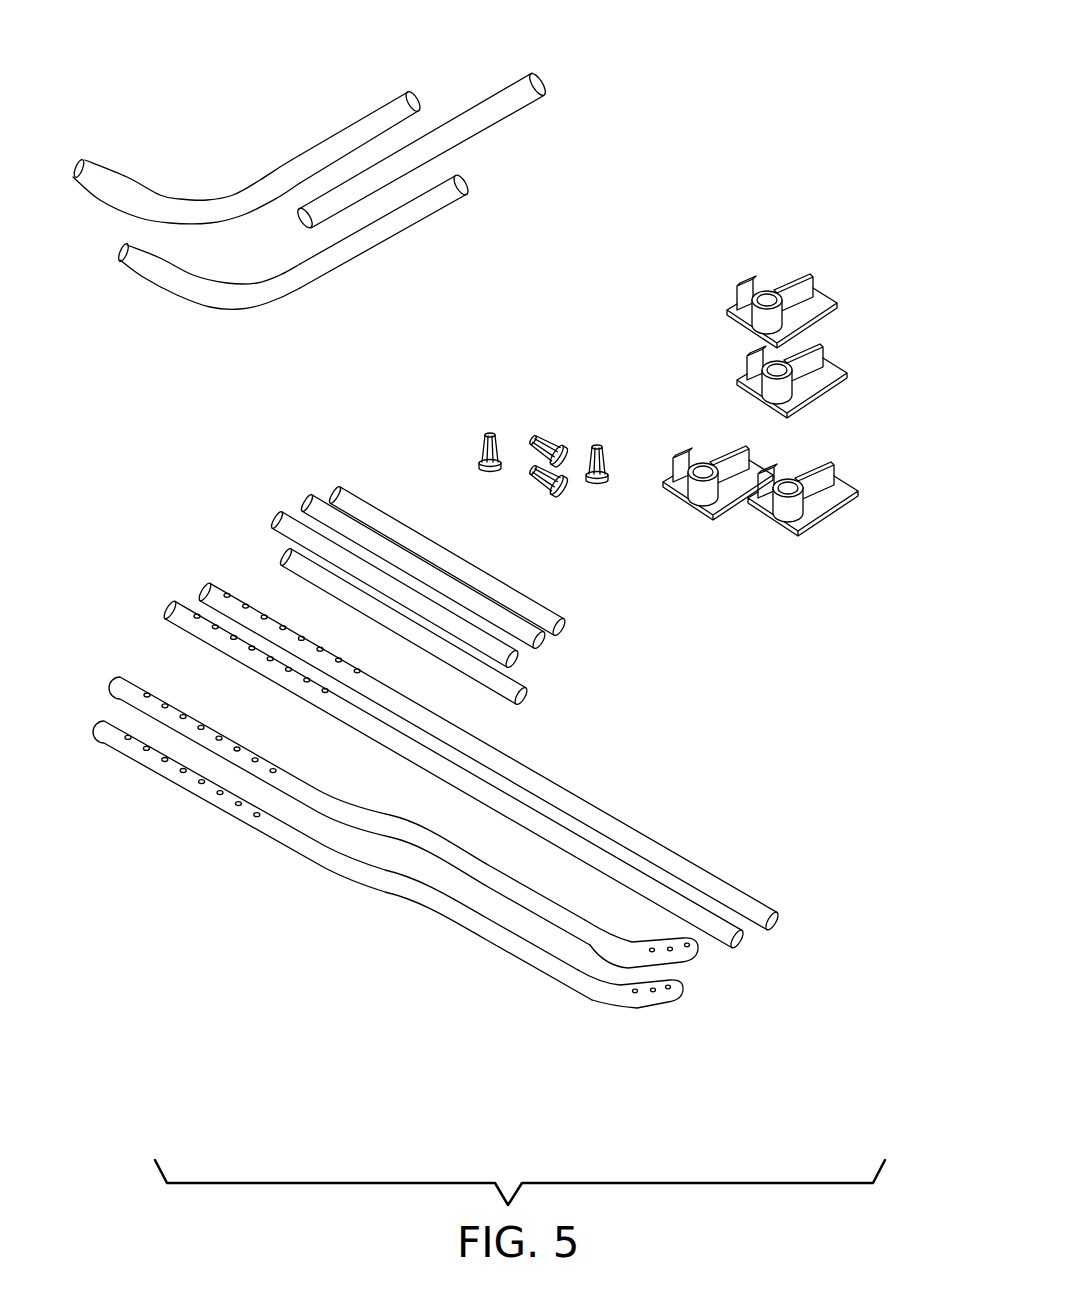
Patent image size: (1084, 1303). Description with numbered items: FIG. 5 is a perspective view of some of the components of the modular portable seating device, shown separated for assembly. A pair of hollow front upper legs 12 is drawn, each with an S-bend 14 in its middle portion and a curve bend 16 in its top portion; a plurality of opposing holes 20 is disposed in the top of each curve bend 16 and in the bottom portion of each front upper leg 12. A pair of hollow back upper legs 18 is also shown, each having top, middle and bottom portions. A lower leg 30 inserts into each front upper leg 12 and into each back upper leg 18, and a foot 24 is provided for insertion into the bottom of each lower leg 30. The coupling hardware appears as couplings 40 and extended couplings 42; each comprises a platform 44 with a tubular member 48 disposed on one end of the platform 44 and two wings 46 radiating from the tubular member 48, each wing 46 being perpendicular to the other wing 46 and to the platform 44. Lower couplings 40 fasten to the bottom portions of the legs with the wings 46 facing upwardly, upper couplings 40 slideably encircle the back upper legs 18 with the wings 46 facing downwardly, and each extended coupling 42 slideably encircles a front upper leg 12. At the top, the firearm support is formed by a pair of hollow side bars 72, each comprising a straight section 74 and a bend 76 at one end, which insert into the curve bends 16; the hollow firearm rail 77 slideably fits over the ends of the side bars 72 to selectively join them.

The front upper leg 12 is at (493, 880).
The S-bend 14 is at (312, 810).
The curve bend 16 is at (716, 965).
The back upper leg 18 is at (607, 857).
The opposing holes 20 is at (652, 950).
The foot 24 is at (430, 444).
The lower leg 30 is at (578, 673).
The coupling 40 is at (841, 190).
The extended coupling 42 is at (838, 551).
The platform 44 is at (853, 492).
The wing 46 is at (813, 285).
The tubular member 48 is at (760, 318).
The side bar 72 is at (205, 124).
The straight section 74 is at (318, 135).
The bend 76 is at (153, 187).
The firearm rail 77 is at (497, 128).